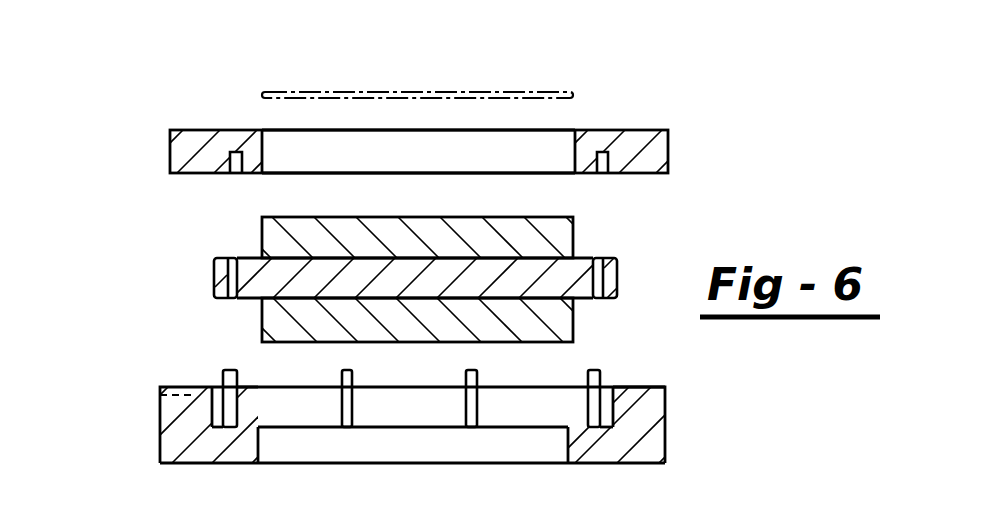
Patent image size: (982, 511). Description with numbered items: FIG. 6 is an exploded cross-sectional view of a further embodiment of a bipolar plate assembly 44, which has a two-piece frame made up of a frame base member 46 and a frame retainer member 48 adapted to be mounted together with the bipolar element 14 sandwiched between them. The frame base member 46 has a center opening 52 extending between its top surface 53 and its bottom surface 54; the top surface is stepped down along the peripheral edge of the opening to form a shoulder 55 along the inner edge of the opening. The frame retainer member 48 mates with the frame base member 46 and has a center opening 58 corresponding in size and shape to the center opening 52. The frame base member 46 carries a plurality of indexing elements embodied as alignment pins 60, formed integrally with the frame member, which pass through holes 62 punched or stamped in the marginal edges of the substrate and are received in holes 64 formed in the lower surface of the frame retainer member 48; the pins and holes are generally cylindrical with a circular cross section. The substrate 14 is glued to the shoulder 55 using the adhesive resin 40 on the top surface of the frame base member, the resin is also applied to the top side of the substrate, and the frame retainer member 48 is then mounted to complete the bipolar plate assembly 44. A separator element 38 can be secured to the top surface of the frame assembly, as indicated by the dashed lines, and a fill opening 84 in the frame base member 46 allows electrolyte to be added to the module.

The bipolar element 14 is at (655, 268).
The separator element 38 is at (527, 92).
The adhesive resin 40 is at (586, 428).
The bipolar plate assembly 44 is at (390, 217).
The frame base member 46 is at (667, 430).
The frame retainer member 48 is at (668, 147).
The center opening 52 is at (522, 410).
The top surface 53 is at (640, 387).
The bottom surface 54 is at (187, 464).
The shoulder 55 is at (250, 428).
The center opening 58 is at (548, 138).
The alignment pins 60 is at (238, 375).
The holes 62 is at (228, 258).
The holes 64 is at (235, 170).
The fill openings 84 is at (190, 393).